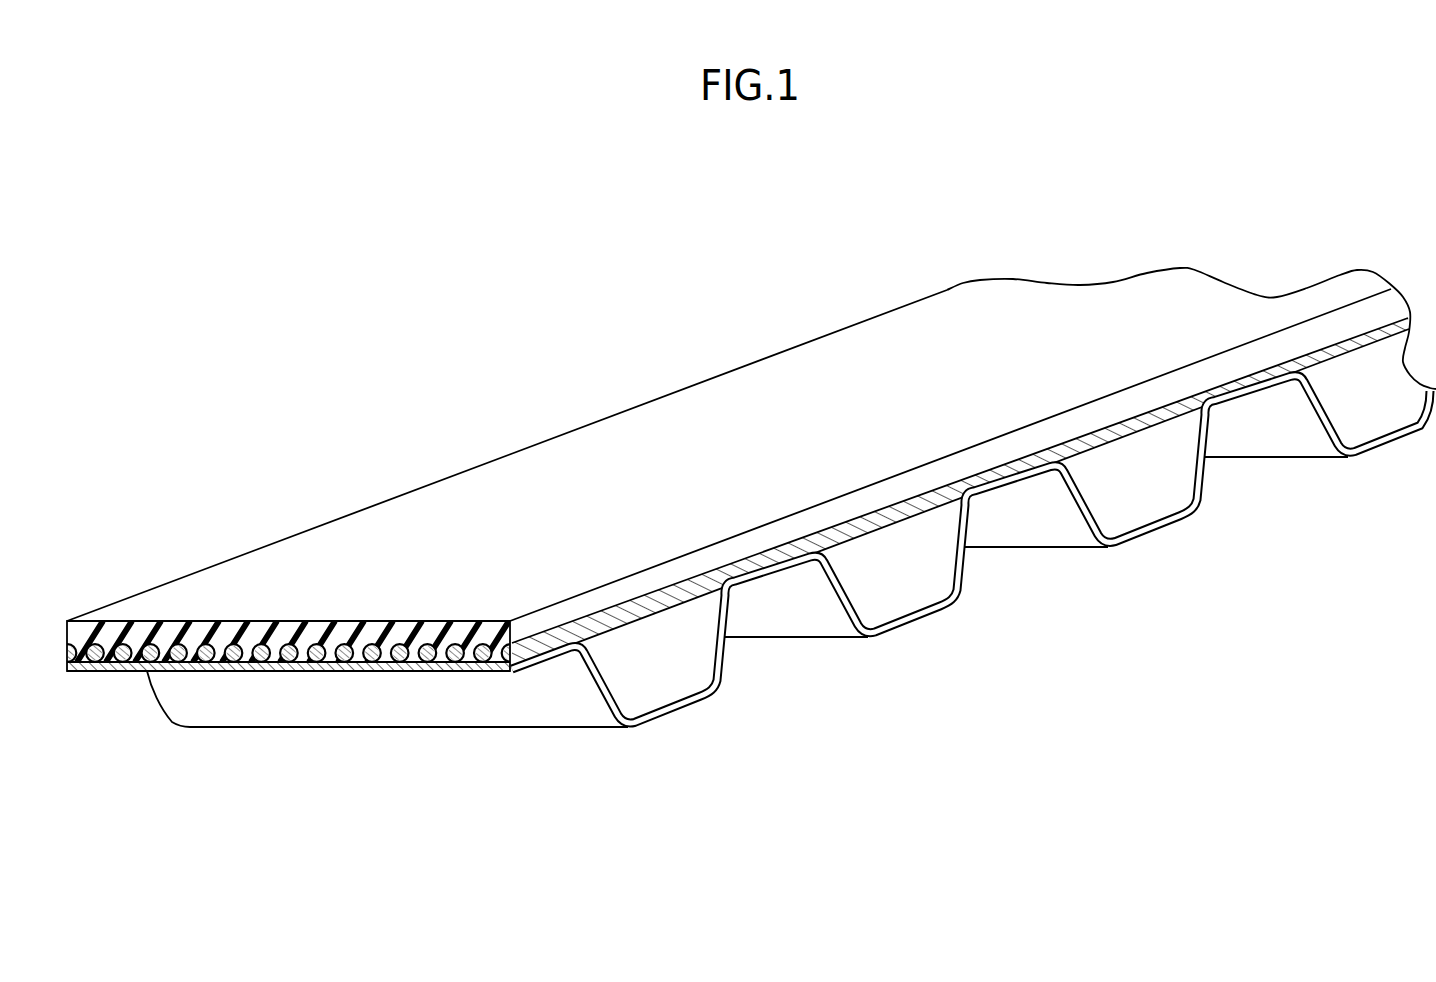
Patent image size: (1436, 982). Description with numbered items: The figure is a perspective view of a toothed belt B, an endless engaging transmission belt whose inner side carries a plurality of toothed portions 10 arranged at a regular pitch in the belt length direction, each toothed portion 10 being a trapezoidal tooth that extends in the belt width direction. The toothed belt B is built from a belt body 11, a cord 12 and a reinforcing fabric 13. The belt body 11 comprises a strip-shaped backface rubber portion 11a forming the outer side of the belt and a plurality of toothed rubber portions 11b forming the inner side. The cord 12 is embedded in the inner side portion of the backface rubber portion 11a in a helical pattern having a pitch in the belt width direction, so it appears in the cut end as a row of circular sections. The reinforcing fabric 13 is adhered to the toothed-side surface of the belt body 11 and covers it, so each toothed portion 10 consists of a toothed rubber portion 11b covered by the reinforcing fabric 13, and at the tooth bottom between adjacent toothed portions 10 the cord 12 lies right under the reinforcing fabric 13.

The toothed belt B is at (612, 286).
The toothed portion 10 is at (537, 730).
The belt body 11 is at (530, 446).
The backface rubber portion 11a is at (790, 522).
The toothed rubber portion 11b is at (660, 680).
The cord 12 is at (423, 640).
The reinforcing fabric 13 is at (283, 672).